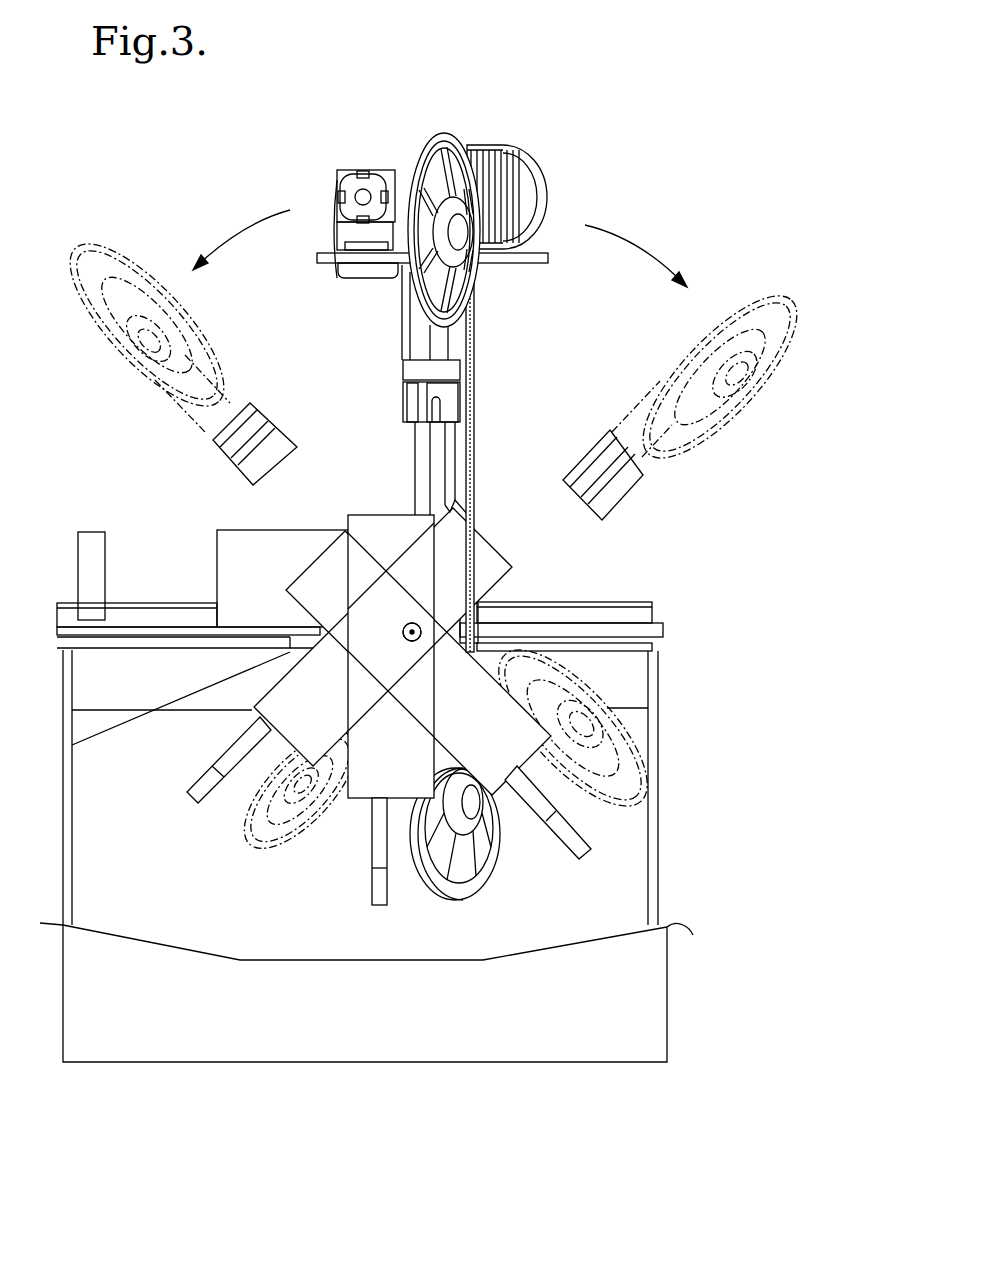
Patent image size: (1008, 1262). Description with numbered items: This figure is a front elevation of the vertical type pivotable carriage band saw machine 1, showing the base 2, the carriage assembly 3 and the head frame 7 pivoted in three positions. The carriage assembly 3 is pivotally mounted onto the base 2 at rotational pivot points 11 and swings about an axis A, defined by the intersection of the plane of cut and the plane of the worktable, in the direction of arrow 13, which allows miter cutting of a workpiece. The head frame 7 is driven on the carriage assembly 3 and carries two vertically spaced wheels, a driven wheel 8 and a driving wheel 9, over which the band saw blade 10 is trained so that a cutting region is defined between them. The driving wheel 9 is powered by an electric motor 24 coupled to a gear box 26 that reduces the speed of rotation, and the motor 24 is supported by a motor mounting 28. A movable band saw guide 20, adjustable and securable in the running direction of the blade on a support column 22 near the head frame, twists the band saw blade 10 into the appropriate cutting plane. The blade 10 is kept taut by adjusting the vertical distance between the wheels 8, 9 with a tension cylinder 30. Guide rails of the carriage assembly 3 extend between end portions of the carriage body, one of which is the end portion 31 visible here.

The band saw machine 1 is at (692, 565).
The base 2 is at (640, 990).
The carriage assembly 3 is at (197, 802).
The head frame 7 is at (452, 447).
The driven wheel 8 is at (257, 840).
The driving wheel 9 is at (435, 137).
The band saw blade 10 is at (420, 475).
The rotational pivot points 11 is at (402, 630).
The arrow 13 is at (235, 228).
The band saw guide 20 is at (441, 397).
The support column 22 is at (462, 487).
The electric motor 24 is at (531, 160).
The gear box 26 is at (368, 170).
The motor mounting 28 is at (515, 262).
The tension cylinder 30 is at (404, 340).
The end portion 31 is at (487, 562).
The axis A is at (412, 630).